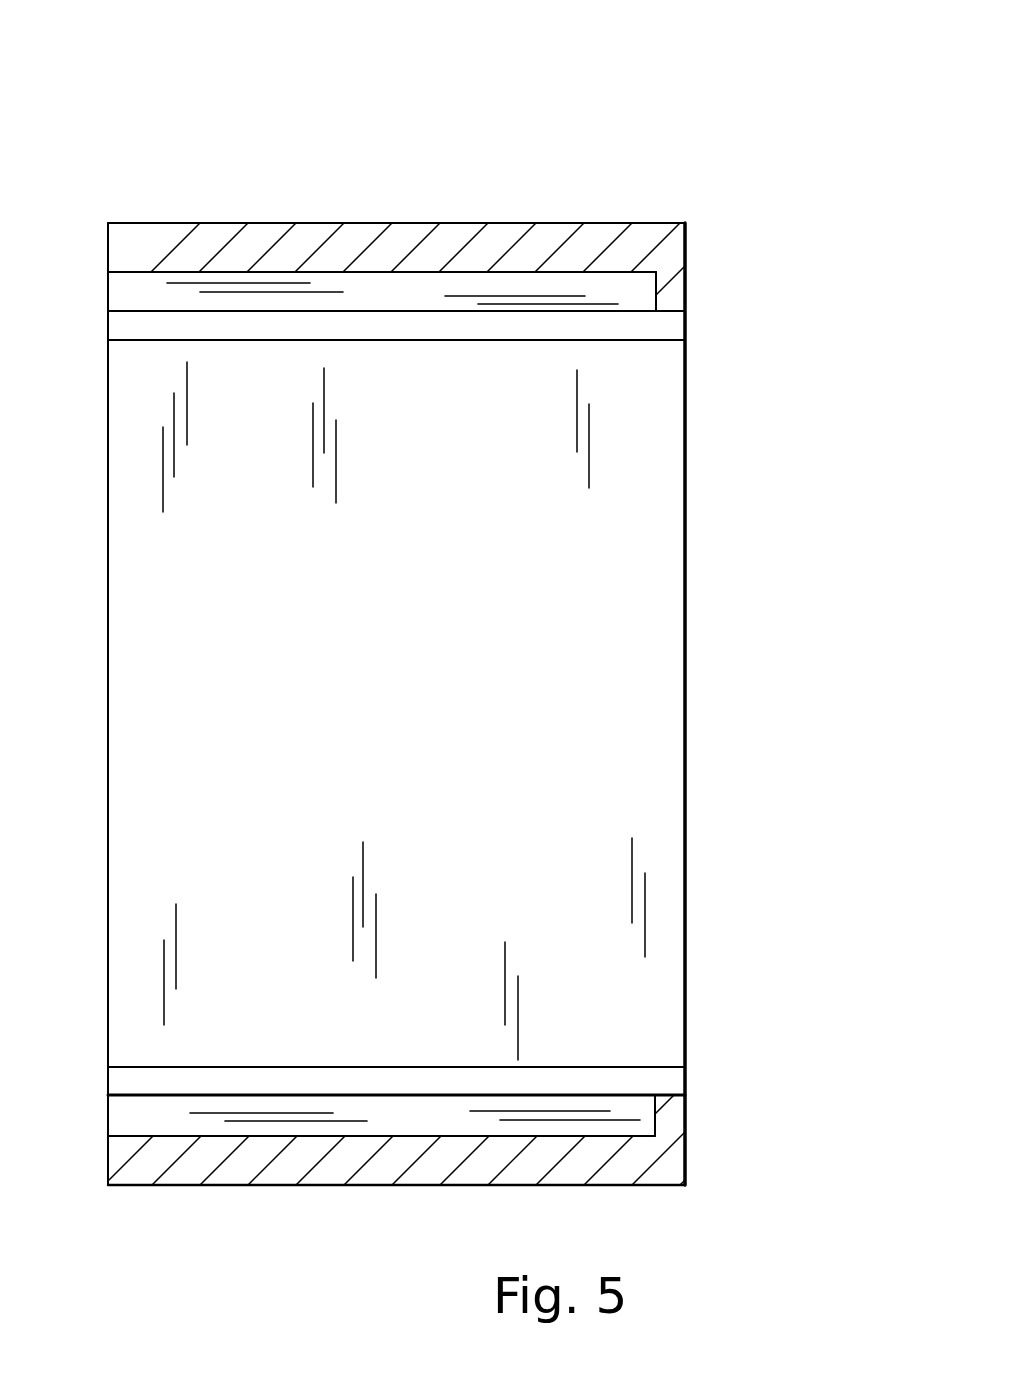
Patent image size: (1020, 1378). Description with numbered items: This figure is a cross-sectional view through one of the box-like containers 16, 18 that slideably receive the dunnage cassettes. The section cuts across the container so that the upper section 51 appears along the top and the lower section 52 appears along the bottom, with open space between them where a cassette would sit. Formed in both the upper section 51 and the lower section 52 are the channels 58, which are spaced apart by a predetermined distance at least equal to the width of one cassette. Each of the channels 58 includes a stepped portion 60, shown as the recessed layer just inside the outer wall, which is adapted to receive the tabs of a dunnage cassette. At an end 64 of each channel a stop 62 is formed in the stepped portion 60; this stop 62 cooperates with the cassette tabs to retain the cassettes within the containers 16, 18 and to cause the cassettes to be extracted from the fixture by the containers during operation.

The container 16 is at (458, 638).
The container 18 is at (170, 116).
The upper section 51 is at (545, 223).
The lower section 52 is at (605, 1185).
The channels 58 is at (414, 362).
The stepped portion 60 is at (540, 272).
The stop 62 is at (680, 291).
The end 64 is at (686, 270).